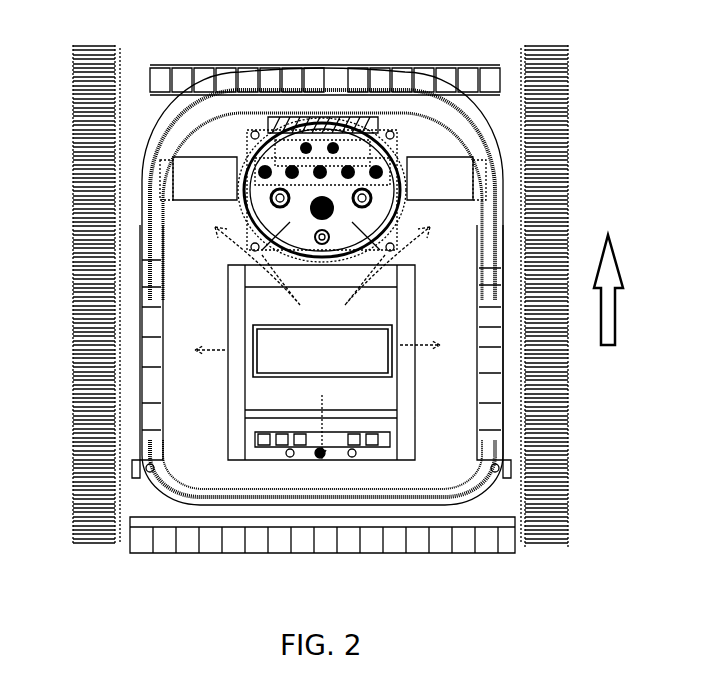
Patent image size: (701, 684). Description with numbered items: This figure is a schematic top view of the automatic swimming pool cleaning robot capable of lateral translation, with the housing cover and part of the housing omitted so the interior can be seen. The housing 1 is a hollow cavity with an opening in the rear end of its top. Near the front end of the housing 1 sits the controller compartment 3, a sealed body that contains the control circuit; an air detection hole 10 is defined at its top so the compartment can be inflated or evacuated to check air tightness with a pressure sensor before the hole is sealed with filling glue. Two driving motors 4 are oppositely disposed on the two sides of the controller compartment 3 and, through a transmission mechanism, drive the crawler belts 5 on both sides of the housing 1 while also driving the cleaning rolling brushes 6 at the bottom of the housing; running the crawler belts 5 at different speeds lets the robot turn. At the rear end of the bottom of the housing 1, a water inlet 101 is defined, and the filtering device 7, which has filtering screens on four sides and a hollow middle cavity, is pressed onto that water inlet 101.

The housing 1 is at (428, 458).
The controller compartment 3 is at (405, 193).
The driving motor 4 is at (203, 180).
The crawler belts 5 is at (95, 223).
The cleaning rolling brush 6 is at (467, 83).
The filtering device 7 is at (307, 318).
The air detection hole 10 is at (312, 237).
The water inlet 101 is at (263, 360).